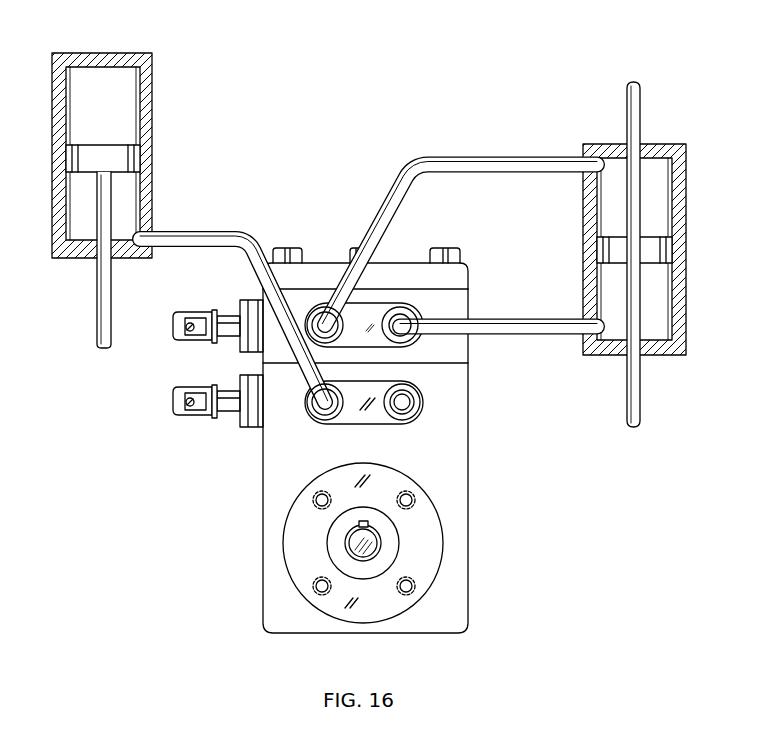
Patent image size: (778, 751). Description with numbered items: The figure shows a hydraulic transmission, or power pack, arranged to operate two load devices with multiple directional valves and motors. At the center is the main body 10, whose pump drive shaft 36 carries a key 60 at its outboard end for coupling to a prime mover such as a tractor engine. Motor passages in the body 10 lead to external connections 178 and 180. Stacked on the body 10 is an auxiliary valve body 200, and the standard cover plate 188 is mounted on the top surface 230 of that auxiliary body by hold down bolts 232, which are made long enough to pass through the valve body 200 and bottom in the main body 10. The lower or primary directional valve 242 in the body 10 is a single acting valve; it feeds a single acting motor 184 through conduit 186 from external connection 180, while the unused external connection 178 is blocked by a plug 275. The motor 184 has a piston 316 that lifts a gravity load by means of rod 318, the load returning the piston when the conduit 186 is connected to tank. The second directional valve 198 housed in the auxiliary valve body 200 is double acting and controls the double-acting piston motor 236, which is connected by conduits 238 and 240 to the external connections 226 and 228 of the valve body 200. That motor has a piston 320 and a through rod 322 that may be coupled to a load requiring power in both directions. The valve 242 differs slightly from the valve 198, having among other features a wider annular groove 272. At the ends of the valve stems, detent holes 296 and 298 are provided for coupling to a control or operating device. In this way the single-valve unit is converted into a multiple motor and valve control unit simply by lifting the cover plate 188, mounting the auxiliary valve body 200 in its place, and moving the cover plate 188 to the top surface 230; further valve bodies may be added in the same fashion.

The body 10 is at (448, 481).
The pump drive shaft 36 is at (356, 546).
The key 60 is at (366, 523).
The external connection 178 is at (418, 421).
The external connection 180 is at (326, 413).
The single acting motor 184 is at (82, 53).
The conduit 186 is at (177, 231).
The cover plate 188 is at (365, 276).
The second directional valve 198 is at (232, 318).
The auxiliary valve body 200 is at (365, 333).
The external connection 226 is at (389, 330).
The external connection 228 is at (339, 325).
The top surface 230 is at (447, 283).
The hold down bolts 232 is at (353, 250).
The double-acting piston motor 236 is at (687, 205).
The conduit 238 is at (494, 336).
The conduit 240 is at (470, 157).
The primary directional valve 242 is at (232, 392).
The annular groove 272 is at (447, 363).
The plug 275 is at (401, 411).
The detent hole 296 is at (188, 333).
The detent hole 298 is at (188, 415).
The piston 316 is at (103, 158).
The rod 318 is at (95, 300).
The piston 320 is at (634, 250).
The through rod 322 is at (641, 105).